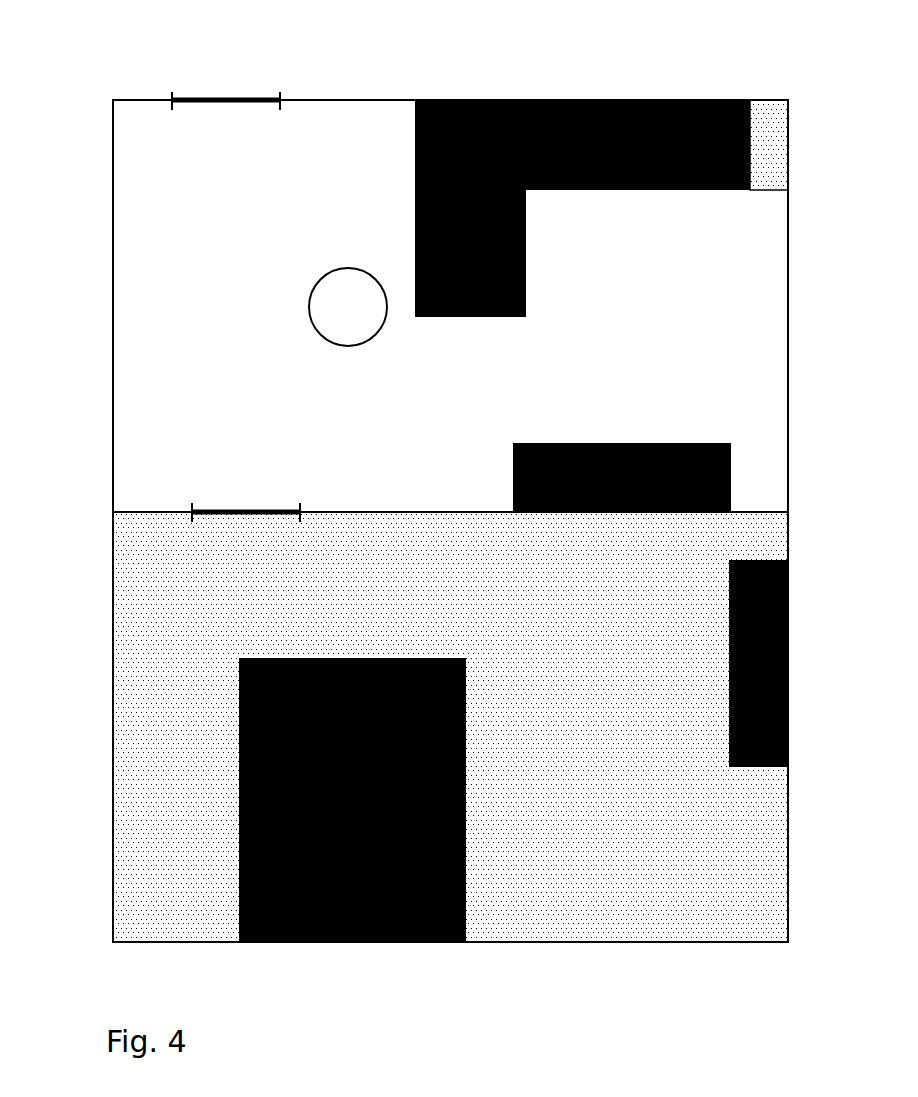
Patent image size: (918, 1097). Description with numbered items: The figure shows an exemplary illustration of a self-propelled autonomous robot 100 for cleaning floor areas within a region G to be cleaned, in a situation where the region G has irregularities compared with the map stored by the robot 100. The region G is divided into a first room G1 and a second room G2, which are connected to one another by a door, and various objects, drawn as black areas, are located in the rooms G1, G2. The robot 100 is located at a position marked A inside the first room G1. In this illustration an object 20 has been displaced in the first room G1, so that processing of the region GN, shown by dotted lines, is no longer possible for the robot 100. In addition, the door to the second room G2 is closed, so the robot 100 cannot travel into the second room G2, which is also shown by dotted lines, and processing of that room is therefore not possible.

The region to be cleaned G is at (284, 66).
The region no longer processable GN is at (762, 102).
The first room G1 is at (108, 287).
The second room G2 is at (108, 706).
The object 20 is at (410, 197).
The autonomous robot 100 is at (303, 289).